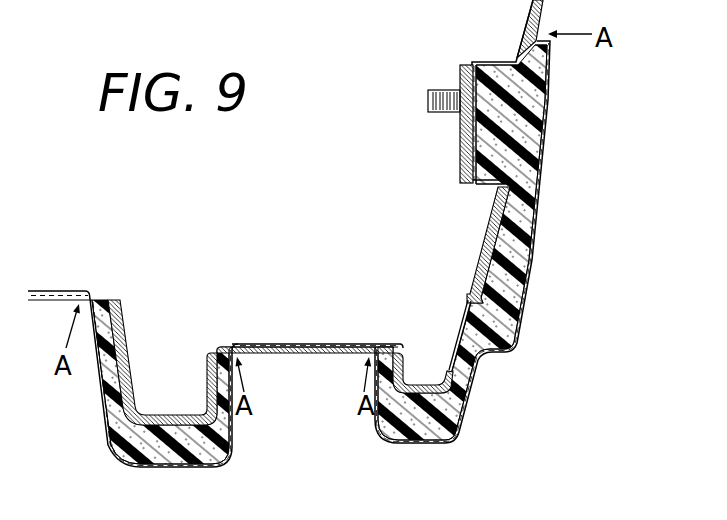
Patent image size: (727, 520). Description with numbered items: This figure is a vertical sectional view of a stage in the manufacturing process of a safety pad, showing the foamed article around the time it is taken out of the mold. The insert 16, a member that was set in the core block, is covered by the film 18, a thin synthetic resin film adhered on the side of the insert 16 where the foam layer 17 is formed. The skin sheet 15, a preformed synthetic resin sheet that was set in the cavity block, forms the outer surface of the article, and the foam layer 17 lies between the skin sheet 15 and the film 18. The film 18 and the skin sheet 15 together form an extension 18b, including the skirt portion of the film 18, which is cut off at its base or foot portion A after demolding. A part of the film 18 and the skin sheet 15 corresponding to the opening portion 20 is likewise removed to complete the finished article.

The skin sheet 15 is at (473, 391).
The insert 16 is at (450, 180).
The foam layer 17 is at (530, 134).
The film 18 is at (466, 327).
The extension 18b is at (519, 7).
The opening portion 20 is at (302, 344).